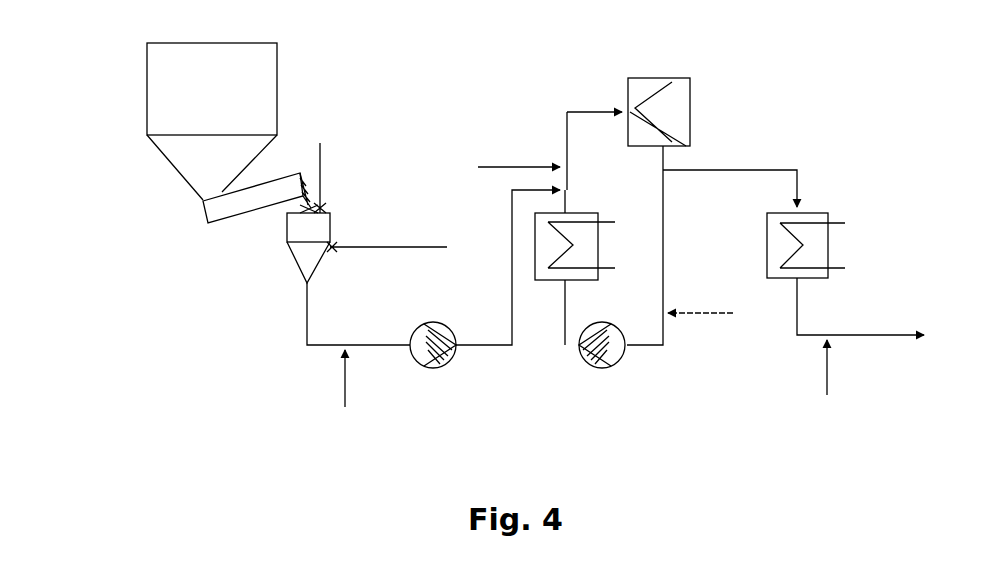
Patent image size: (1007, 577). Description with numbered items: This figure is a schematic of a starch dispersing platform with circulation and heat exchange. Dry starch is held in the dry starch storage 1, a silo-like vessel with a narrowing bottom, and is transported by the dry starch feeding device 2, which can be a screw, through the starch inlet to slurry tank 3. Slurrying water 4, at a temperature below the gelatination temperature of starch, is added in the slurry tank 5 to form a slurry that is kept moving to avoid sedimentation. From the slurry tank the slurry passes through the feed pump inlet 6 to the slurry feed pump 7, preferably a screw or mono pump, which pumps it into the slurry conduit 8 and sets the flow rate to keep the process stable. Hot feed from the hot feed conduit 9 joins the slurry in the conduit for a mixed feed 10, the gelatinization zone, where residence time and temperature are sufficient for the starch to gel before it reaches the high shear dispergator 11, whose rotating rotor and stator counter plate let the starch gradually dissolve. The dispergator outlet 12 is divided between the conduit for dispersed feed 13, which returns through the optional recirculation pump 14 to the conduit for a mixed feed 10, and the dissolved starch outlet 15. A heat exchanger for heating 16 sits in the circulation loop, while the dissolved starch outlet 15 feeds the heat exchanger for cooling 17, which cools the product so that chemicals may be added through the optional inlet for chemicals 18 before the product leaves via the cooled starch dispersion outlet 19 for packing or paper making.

The dry starch storage 1 is at (147, 78).
The dry starch feeding device 2 is at (205, 214).
The starch inlet to slurry tank 3 is at (300, 175).
The slurrying water 4 is at (433, 247).
The slurry tank 5 is at (297, 257).
The feed pump inlet 6 is at (375, 345).
The slurry feed pump 7 is at (428, 322).
The slurry conduit 8 is at (482, 345).
The hot feed conduit 9 is at (500, 167).
The conduit for a mixed feed 10 is at (580, 112).
The high shear dispergator 11 is at (640, 78).
The dispergator outlet 12 is at (663, 150).
The conduit for dispersed feed 13 is at (663, 200).
The recirculation pump 14 is at (602, 370).
The dissolved starch outlet 15 is at (763, 170).
The heat exchanger for heating 16 is at (598, 280).
The heat exchanger for cooling 17 is at (828, 278).
The inlet for chemical(s) 18 is at (320, 160).
The cooled starch dispersion outlet 19 is at (888, 335).